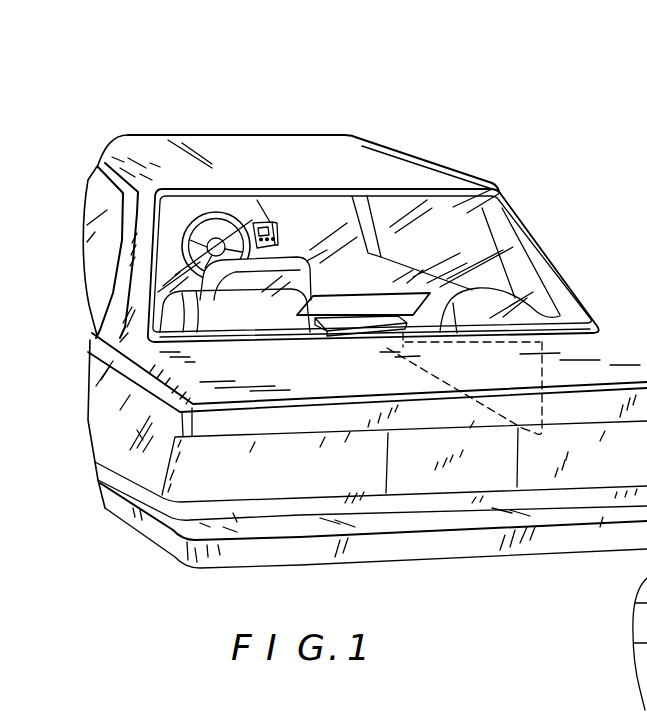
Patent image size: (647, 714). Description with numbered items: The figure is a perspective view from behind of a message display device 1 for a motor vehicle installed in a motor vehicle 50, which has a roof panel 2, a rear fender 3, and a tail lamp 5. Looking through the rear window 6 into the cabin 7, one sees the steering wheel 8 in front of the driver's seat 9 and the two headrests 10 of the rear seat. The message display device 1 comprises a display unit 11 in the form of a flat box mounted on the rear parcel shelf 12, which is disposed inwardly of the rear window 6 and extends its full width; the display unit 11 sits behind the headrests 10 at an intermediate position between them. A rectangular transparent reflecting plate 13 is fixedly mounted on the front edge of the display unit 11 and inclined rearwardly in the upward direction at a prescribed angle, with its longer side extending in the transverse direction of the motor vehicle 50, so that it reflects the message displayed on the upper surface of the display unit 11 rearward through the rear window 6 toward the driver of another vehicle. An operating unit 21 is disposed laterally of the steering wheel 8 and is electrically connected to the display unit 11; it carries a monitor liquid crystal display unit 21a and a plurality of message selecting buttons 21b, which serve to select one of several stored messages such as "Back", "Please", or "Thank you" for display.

The message display device 1 is at (385, 280).
The roof panel 2 is at (348, 142).
The rear fender 3 is at (118, 428).
The tail lamp 5 is at (280, 480).
The rear window 6 is at (482, 237).
The cabin 7 is at (426, 216).
The steering wheel 8 is at (220, 212).
The driver's seat 9 is at (292, 260).
The headrests 10 is at (223, 310).
The display unit 11 is at (368, 331).
The rear parcel shelf 12 is at (299, 326).
The transparent reflecting plate 13 is at (423, 293).
The operating unit 21 is at (253, 223).
The monitor liquid crystal display unit 21a is at (272, 226).
The message selecting buttons 21b is at (279, 240).
The motor vehicle 50 is at (583, 208).